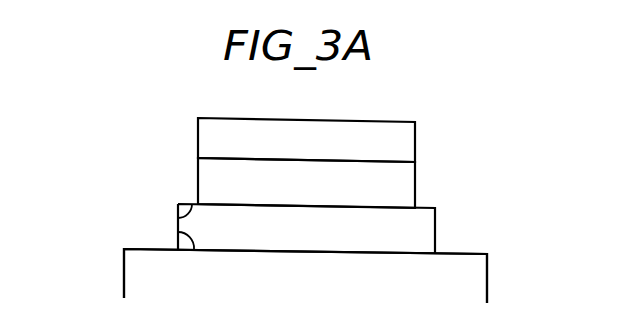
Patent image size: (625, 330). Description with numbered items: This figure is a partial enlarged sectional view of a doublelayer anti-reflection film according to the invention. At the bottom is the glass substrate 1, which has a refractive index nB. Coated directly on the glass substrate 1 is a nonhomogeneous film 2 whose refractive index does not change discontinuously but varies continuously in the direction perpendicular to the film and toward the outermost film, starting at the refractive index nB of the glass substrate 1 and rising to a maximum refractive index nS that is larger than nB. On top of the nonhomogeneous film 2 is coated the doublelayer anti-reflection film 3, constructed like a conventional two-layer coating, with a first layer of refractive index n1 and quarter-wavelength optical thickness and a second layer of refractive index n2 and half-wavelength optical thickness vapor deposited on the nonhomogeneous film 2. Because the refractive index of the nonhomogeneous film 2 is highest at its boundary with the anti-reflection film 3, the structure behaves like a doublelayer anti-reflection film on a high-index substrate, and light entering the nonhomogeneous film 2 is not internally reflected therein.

The glass substrate 1 is at (482, 278).
The nonhomogeneous film 2 is at (281, 216).
The doublelayer anti-reflection film 3 is at (276, 147).
The refractive index of first layer n1 is at (205, 142).
The refractive index of second layer n2 is at (233, 171).
The maximum refractive index of nonhomogeneous film nS is at (121, 198).
The refractive index of glass substrate nB is at (178, 232).